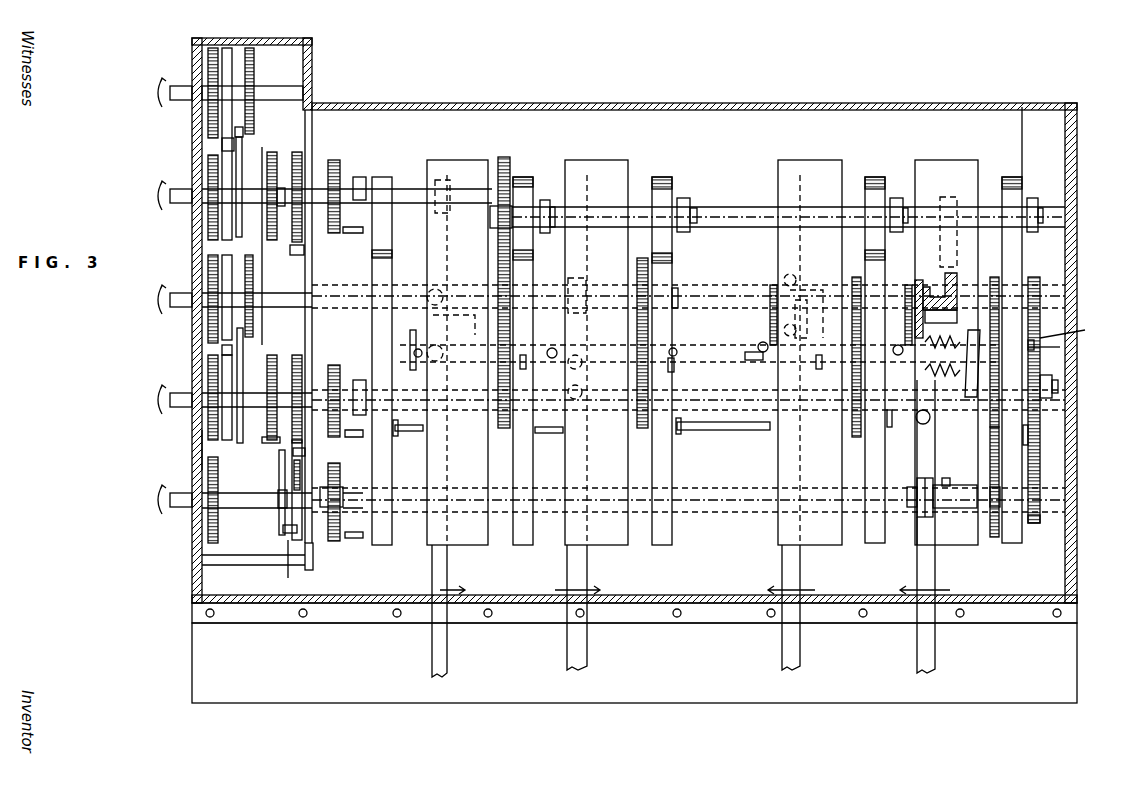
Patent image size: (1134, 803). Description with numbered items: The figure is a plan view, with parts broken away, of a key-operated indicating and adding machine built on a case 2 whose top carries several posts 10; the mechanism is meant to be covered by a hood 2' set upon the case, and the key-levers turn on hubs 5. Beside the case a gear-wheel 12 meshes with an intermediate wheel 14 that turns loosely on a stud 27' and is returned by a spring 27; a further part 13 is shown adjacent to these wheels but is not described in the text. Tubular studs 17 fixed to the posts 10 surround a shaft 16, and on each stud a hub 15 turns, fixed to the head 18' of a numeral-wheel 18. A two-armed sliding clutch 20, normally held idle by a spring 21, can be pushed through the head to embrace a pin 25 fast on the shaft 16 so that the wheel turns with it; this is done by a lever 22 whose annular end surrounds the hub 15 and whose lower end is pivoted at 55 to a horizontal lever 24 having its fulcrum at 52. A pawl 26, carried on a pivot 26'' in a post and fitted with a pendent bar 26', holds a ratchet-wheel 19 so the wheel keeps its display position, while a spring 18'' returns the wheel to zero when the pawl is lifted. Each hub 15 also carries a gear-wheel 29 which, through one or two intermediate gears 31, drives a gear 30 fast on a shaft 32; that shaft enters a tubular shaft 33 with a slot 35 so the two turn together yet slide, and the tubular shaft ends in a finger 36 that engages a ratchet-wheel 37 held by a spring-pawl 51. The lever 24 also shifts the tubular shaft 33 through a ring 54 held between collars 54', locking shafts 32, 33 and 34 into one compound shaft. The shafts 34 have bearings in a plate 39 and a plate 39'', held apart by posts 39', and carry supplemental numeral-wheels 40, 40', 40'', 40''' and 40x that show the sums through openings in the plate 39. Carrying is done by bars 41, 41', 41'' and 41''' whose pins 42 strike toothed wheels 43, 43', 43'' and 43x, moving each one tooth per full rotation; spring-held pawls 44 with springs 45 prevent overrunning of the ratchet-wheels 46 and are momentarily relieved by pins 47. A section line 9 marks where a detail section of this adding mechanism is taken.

The case 2 is at (647, 370).
The hood 2' is at (634, 339).
The hubs 5 is at (1028, 437).
The section line 9 is at (262, 150).
The posts 10 is at (380, 177).
The gear-wheel 12 is at (1037, 524).
The lever 13 is at (1074, 327).
The intermediate wheel 14 is at (1040, 291).
The hub 15 is at (485, 375).
The shaft 16 is at (1062, 347).
The tubular studs 17 is at (526, 362).
The numeral-wheels 18 is at (702, 343).
The head 18' is at (927, 291).
The spring 18'' is at (655, 304).
The ratchet-wheel 19 is at (952, 276).
The sliding clutch 20 is at (955, 340).
The spring 21 is at (935, 340).
The lever 22 is at (972, 397).
The lever 24 is at (567, 570).
The pin 25 is at (418, 358).
The pawl 26 is at (862, 286).
The pendent bar 26' is at (903, 200).
The pivot 26'' is at (901, 215).
The returning-spring 27 is at (1077, 379).
The stud 27' is at (1085, 387).
The gear-wheel 29 is at (648, 270).
The gear 30 is at (505, 162).
The intermediate gears 31 is at (533, 256).
The shaft 32 is at (545, 200).
The tubular shaft 33 is at (404, 186).
The shafts 34 is at (168, 93).
The slot 35 is at (944, 478).
The finger 36 is at (363, 538).
The ratchet-wheel 37 is at (336, 541).
The plate 39 is at (181, 450).
The posts 39' is at (253, 571).
The plate 39'' is at (330, 565).
The supplemental numeral-wheels 40 is at (193, 500).
The numeral-wheel 40' is at (189, 397).
The numeral-wheel 40'' is at (187, 299).
The numeral-wheel 40''' is at (186, 196).
The numeral-wheel 40x is at (208, 63).
The bar 41 is at (277, 490).
The bar 41' is at (180, 385).
The bar 41'' is at (314, 223).
The bar 41''' is at (262, 170).
The pin 42 is at (267, 442).
The toothed wheel 43 is at (303, 389).
The toothed wheel 43' is at (199, 306).
The toothed wheel 43'' is at (315, 178).
The toothed wheel 43x is at (250, 72).
The spring-held pawls 44 is at (297, 513).
The springs 45 is at (305, 452).
The ratchet-wheels 46 is at (302, 374).
The pins 47 is at (283, 533).
The spring-pawl 51 is at (340, 485).
The fulcrum 52 is at (930, 412).
The ring 54 is at (917, 534).
The collars 54' is at (932, 507).
The pivotal connection 55 is at (790, 280).